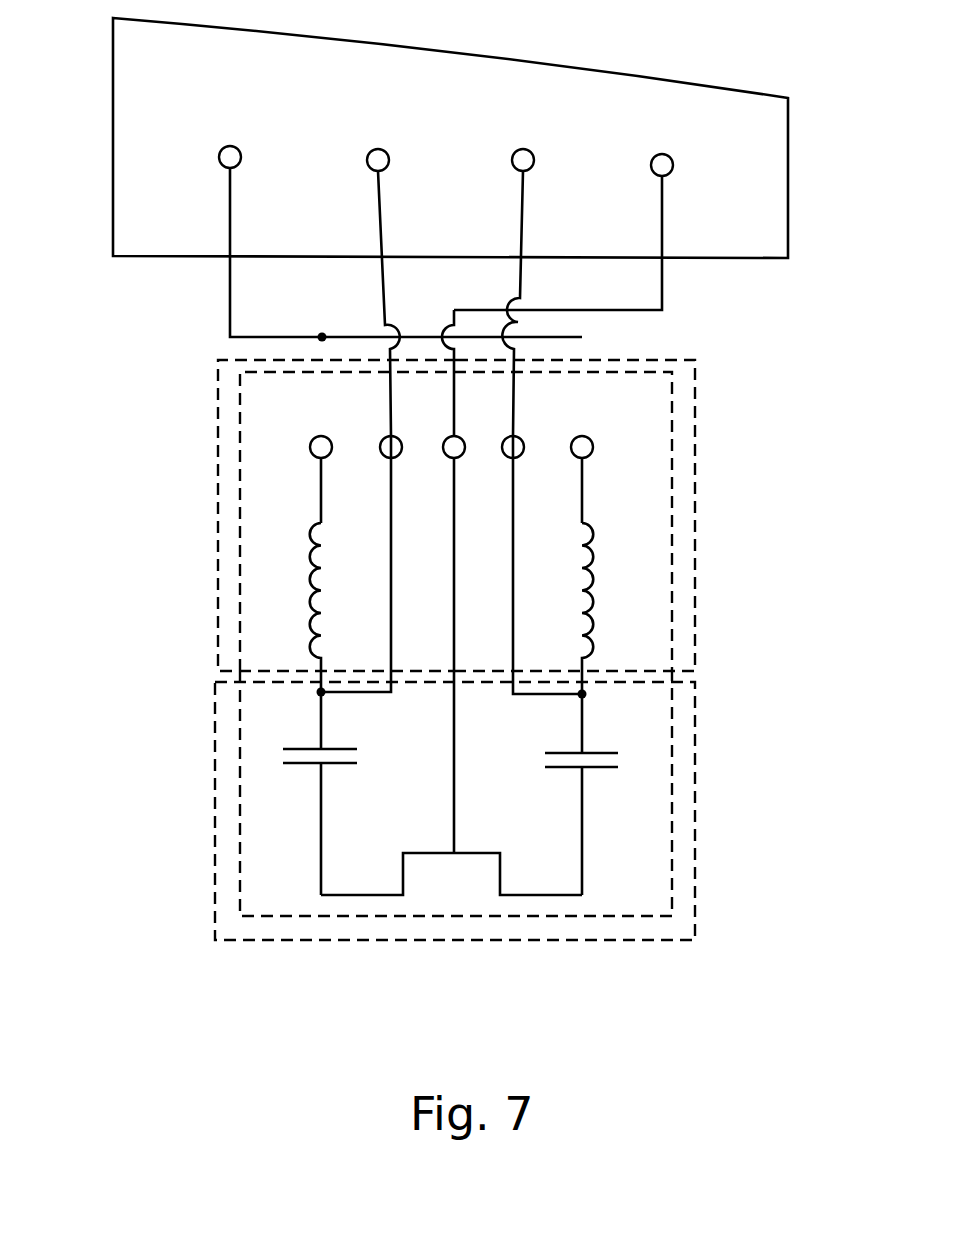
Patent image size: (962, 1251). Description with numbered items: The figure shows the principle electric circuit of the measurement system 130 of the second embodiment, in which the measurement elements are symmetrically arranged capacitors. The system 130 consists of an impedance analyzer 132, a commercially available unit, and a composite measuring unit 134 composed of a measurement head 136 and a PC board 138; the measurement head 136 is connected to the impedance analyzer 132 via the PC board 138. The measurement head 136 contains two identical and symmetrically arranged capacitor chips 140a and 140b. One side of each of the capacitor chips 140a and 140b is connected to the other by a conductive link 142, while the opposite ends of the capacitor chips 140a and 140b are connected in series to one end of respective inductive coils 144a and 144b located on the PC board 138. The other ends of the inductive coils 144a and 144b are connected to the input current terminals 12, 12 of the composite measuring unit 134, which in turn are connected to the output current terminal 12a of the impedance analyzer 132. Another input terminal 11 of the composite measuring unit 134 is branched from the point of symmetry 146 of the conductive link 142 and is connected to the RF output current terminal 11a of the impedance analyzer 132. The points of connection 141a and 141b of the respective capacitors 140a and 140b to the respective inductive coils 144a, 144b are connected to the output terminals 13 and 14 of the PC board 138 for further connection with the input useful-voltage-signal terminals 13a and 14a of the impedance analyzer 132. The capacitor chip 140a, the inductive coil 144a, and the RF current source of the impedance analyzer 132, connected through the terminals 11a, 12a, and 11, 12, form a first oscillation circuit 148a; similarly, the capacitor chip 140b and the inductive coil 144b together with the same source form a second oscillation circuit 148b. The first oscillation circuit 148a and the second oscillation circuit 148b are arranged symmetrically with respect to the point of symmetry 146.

The measurement system 130 is at (83, 260).
The impedance analyzer 132 is at (790, 211).
The output current terminal 12a is at (397, 220).
The input useful-voltage-signal terminal 13a is at (389, 267).
The input useful-voltage-signal terminal 14a is at (532, 267).
The RF output current terminal 11a is at (578, 204).
The input terminal 11 is at (446, 439).
The input current terminal 12 is at (310, 447).
The output terminal 13 is at (383, 439).
The output terminal 14 is at (521, 439).
The first oscillation circuit 148a is at (234, 545).
The second oscillation circuit 148b is at (676, 465).
The PC board 138 is at (697, 536).
The measurement head 136 is at (697, 895).
The composite measuring unit 134 is at (170, 881).
The inductive coil 144a is at (309, 605).
The inductive coil 144b is at (594, 605).
The point of connection 141a is at (321, 692).
The point of connection 141b is at (584, 697).
The capacitor chip 140a is at (283, 762).
The capacitor chip 140b is at (618, 755).
The conductive link 142 is at (405, 873).
The point of symmetry 146 is at (452, 857).